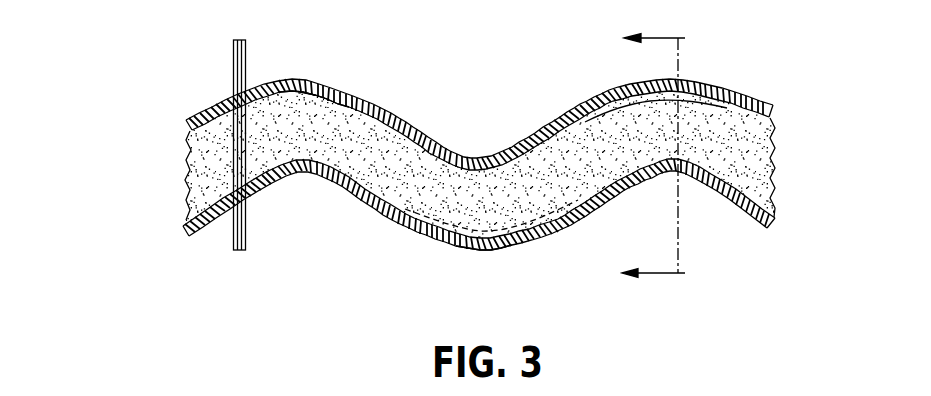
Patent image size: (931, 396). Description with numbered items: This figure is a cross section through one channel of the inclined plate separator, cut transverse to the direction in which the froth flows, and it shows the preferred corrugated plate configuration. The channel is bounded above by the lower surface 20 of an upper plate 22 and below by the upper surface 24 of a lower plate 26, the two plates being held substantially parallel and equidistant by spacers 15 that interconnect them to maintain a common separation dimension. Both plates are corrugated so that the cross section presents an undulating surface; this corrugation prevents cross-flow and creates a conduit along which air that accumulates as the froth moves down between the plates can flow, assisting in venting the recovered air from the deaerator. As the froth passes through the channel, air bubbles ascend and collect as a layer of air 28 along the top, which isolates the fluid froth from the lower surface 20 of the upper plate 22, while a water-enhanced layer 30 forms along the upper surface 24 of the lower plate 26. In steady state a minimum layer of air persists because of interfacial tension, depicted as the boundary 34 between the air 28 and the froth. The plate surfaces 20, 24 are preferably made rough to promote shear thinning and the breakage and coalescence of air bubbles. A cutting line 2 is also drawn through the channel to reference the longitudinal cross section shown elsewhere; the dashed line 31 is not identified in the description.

The spacer 15 is at (237, 67).
The lower surface of upper plate 20 is at (692, 93).
The upper plate 22 is at (620, 84).
The upper surface of lower plate 24 is at (643, 170).
The lower plate 26 is at (620, 190).
The layer of air 28 is at (302, 90).
The water-enhanced layer 30 is at (485, 238).
The adhesive layer 31 is at (442, 223).
The boundary 34 is at (320, 98).
The cutting line 2- 2 is at (643, 155).